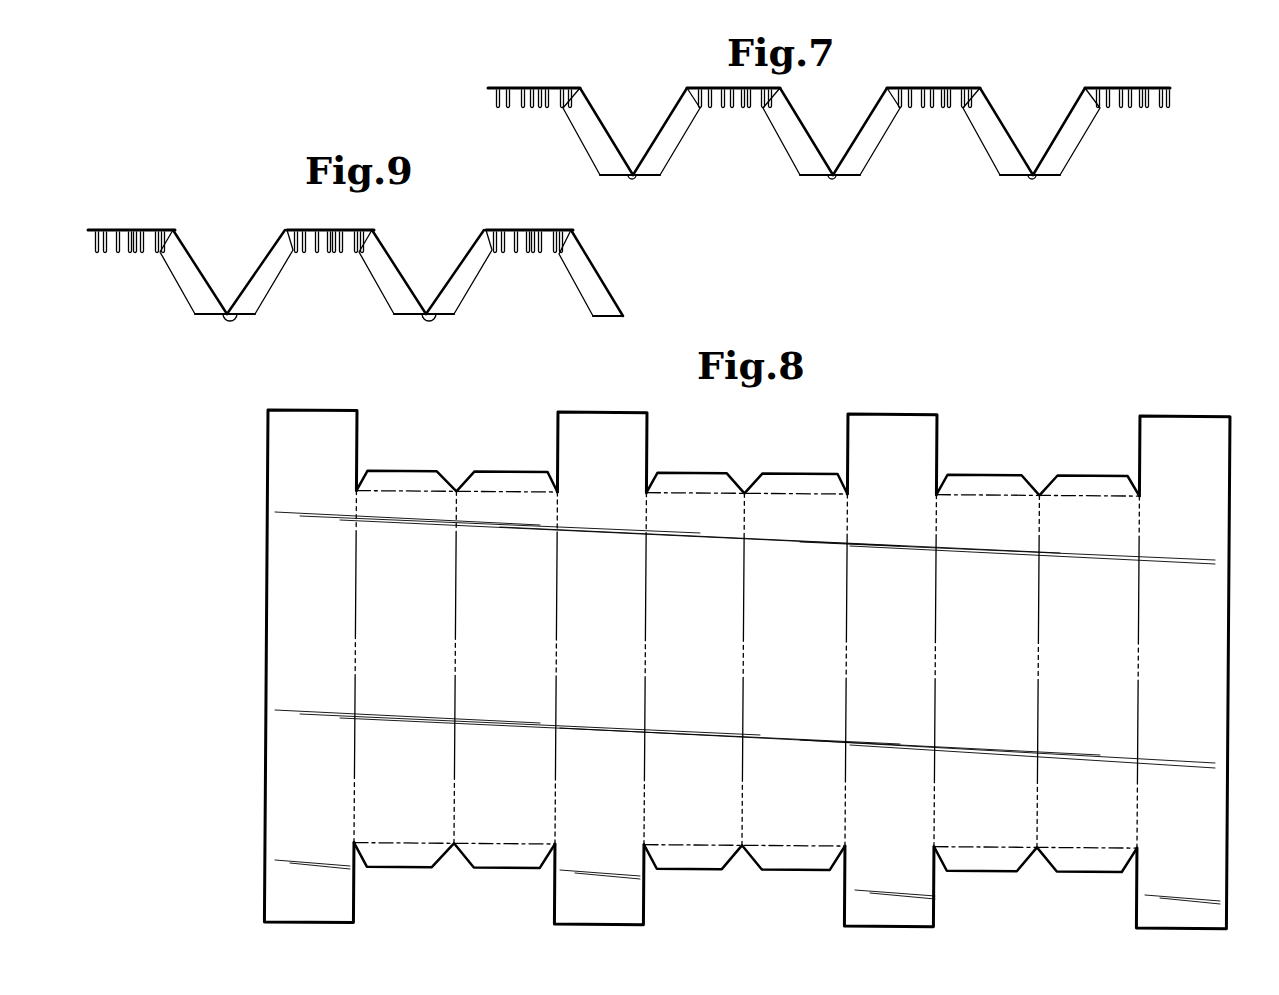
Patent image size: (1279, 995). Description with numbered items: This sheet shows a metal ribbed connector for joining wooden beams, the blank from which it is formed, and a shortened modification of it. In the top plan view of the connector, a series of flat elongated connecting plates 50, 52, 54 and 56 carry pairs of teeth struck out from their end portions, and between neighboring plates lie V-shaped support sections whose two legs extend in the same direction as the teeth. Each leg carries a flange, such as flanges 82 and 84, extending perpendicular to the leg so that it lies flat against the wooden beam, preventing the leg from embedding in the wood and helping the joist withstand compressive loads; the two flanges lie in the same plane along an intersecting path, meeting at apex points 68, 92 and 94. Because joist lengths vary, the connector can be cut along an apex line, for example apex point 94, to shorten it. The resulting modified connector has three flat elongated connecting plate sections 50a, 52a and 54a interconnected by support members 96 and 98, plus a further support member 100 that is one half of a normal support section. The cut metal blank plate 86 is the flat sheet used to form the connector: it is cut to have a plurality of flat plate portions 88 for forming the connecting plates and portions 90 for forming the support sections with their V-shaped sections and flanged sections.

In FIG. 7, the connecting plate 50 is at (530, 82).
In FIG. 7, the connecting plate 52 is at (720, 70).
In FIG. 7, the connecting plate 54 is at (902, 94).
In FIG. 7, the connecting plate 56 is at (1165, 89).
In FIG. 7, the flange 82 is at (590, 152).
In FIG. 7, the flange 84 is at (680, 150).
In FIG. 7, the apex line 68 is at (632, 177).
In FIG. 7, the apex point 92 is at (832, 177).
In FIG. 7, the apex point 94 is at (1032, 178).
In FIG. 9, the connecting plate section 50a is at (146, 229).
In FIG. 9, the connecting plate section 52a is at (318, 229).
In FIG. 9, the connecting plate section 54a is at (531, 229).
In FIG. 9, the support member 96 is at (232, 254).
In FIG. 9, the support member 98 is at (440, 264).
In FIG. 9, the support member 100 is at (614, 280).
In FIG. 8, the cut metal blank plate 86 is at (701, 656).
In FIG. 8, the flat plate portion 88 is at (340, 410).
In FIG. 8, the portion for forming support section 90 is at (460, 464).